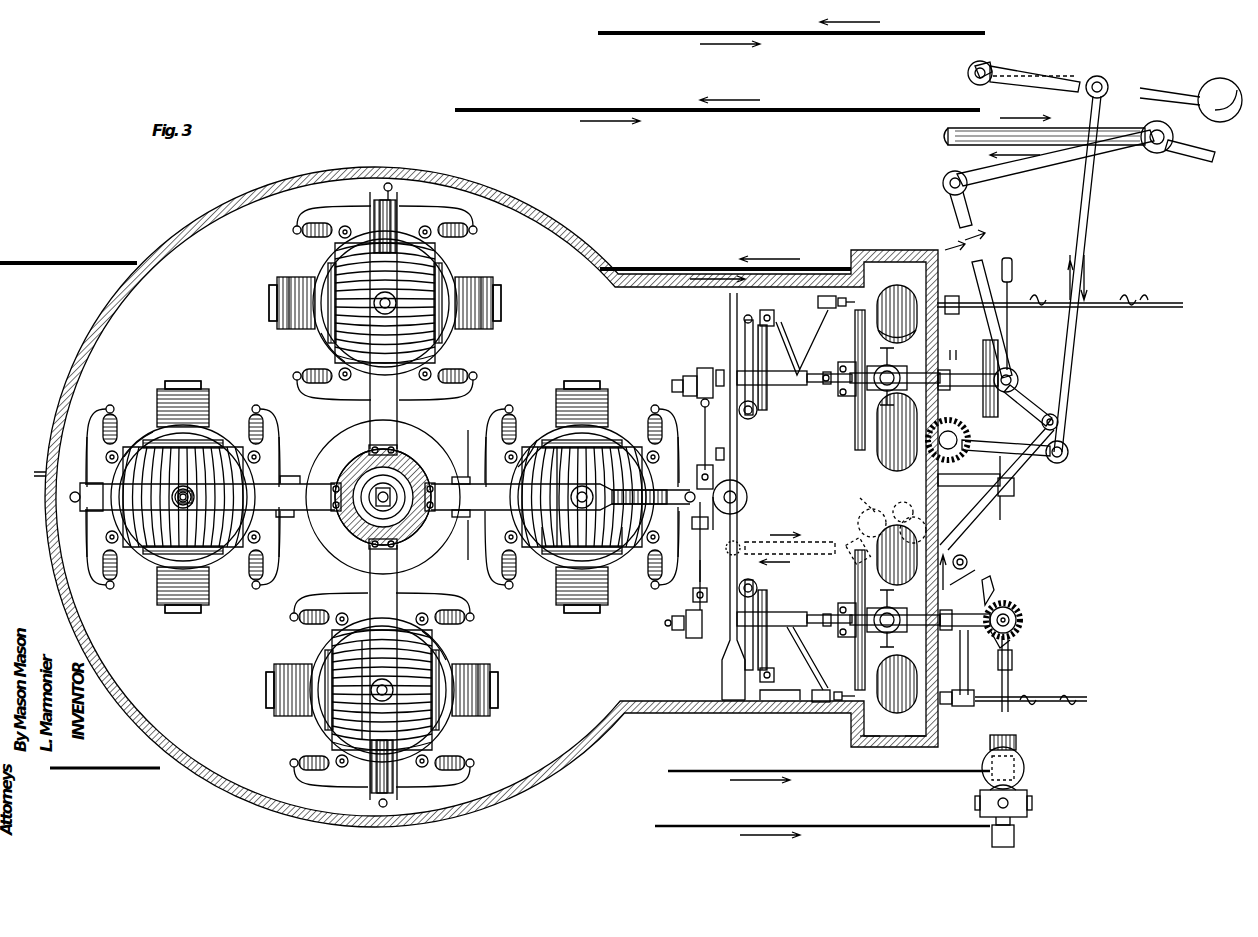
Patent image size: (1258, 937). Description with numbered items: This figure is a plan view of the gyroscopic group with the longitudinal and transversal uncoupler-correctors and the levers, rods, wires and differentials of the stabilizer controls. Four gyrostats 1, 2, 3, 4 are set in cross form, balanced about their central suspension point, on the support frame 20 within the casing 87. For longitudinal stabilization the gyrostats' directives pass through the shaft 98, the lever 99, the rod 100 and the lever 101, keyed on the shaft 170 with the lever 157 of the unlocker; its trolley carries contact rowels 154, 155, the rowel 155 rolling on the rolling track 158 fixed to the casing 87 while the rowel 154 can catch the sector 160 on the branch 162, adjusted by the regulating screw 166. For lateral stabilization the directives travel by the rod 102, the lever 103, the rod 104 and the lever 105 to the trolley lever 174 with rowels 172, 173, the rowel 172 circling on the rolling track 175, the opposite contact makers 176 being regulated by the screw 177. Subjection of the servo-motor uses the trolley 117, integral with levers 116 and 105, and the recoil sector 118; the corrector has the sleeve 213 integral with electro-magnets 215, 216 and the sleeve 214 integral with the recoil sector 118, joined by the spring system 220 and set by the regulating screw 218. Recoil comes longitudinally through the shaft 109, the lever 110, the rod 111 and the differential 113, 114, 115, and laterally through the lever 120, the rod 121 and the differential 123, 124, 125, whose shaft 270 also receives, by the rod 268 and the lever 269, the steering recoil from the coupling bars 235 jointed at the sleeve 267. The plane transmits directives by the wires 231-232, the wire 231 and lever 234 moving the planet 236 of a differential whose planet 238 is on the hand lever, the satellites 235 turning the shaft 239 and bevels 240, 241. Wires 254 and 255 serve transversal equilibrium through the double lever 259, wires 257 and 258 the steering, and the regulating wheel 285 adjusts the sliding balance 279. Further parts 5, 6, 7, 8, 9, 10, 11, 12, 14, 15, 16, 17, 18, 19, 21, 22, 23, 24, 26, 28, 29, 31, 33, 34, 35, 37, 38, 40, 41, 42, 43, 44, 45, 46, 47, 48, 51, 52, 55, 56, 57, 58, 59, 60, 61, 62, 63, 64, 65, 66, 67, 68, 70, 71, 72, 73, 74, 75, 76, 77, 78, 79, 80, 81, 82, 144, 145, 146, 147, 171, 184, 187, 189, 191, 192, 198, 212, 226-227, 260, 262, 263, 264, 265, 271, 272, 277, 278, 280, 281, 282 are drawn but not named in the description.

The gyrostat 1 is at (183, 497).
The gyrostat 2 is at (582, 497).
The gyrostat 3 is at (385, 303).
The gyrostat 4 is at (372, 690).
The bearing block 5 is at (191, 379).
The bearing block 6 is at (178, 620).
The bearing block 7 is at (588, 379).
The bearing block 8 is at (570, 600).
The shaft 9 is at (271, 314).
The shaft 10 is at (503, 306).
The shaft end 11 is at (259, 703).
The shaft end 12 is at (514, 687).
The central hub 14 is at (370, 462).
The hub ring 15 is at (402, 470).
The bearing 16 is at (395, 455).
The bearing 17 is at (372, 538).
The bearing 18 is at (427, 482).
The bearing 19 is at (345, 520).
The support frame 20 is at (347, 442).
The left arm 21 is at (310, 486).
The right arm 22 is at (425, 513).
The upper arm 23 is at (397, 420).
The lower arm 24 is at (397, 590).
The collar 26 is at (203, 496).
The rotor 28 is at (530, 551).
The shaft end 29 is at (254, 294).
The shaft 31 is at (498, 682).
The shaft center 33 is at (184, 507).
The rotor 34 is at (632, 567).
The shaft end 35 is at (510, 294).
The pin 37 is at (82, 503).
The bracket 38 is at (290, 480).
The bracket 40 is at (745, 510).
The pin 41 is at (399, 168).
The pin 42 is at (400, 774).
The stator ring 43 is at (183, 498).
The stator ring 44 is at (578, 489).
The stator ring 45 is at (397, 304).
The stator ring 46 is at (450, 645).
The yoke arm 47 is at (78, 535).
The shaft center 48 is at (183, 484).
The rod 51 is at (688, 451).
The rotor 52 is at (600, 480).
The rack 55 is at (362, 216).
The rack 56 is at (409, 217).
The rack 57 is at (361, 775).
The rotor 58 is at (325, 690).
The spring 59 is at (196, 432).
The spring 60 is at (103, 558).
The spring 61 is at (252, 494).
The yoke arm 62 is at (261, 557).
The yoke arm 63 is at (93, 435).
The spring 64 is at (114, 486).
The yoke arm 65 is at (284, 441).
The bracket 66 is at (284, 514).
The spring 67 is at (595, 427).
The spring 68 is at (505, 554).
The yoke arm 70 is at (658, 566).
The yoke arm 71 is at (478, 441).
The spring 72 is at (665, 489).
The rod 73 is at (475, 555).
The spring 74 is at (582, 501).
The spring 75 is at (332, 231).
The spring 76 is at (438, 231).
The spring 77 is at (312, 378).
The spring 78 is at (445, 373).
The spring 79 is at (326, 618).
The spring 80 is at (443, 616).
The spring 81 is at (306, 766).
The spring 82 is at (435, 759).
The casing 87 is at (730, 430).
The shaft 98 is at (460, 530).
The lever 99 is at (693, 542).
The rod 100 is at (680, 622).
The lever 101 is at (703, 635).
The rod 102 is at (470, 465).
The lever 103 is at (722, 470).
The rod 104 is at (725, 452).
The lever 105 is at (700, 372).
The shaft 109 is at (1085, 700).
The lever 110 is at (964, 708).
The rod 111 is at (975, 694).
The differential 113 is at (1000, 596).
The differential 114 is at (1020, 614).
The differential 115 is at (1021, 626).
The lever 116 is at (790, 374).
The trolley 117 is at (845, 300).
The recoil sector 118 is at (857, 440).
The lever 120 is at (958, 296).
The rod 121 is at (1000, 275).
The differential 123 is at (1000, 362).
The differential 124 is at (1018, 380).
The differential 125 is at (965, 387).
The pivot 144 is at (746, 494).
The pivot 145 is at (742, 535).
The slide 146 is at (803, 560).
The rack 147 is at (856, 562).
The contact rowel 154 is at (790, 672).
The contact rowel 155 is at (740, 702).
The lever 157 is at (790, 713).
The rolling track 158 is at (745, 640).
The sector 160 is at (750, 660).
The branch 162 is at (770, 613).
The regulating screw 166 is at (755, 588).
The shaft 170 is at (692, 640).
The contact 171 is at (690, 386).
The rowel 172 is at (748, 320).
The rowel 173 is at (772, 316).
The trolley lever 174 is at (805, 356).
The rolling track 175 is at (740, 355).
The contact makers 176 is at (748, 340).
The screw 177 is at (750, 418).
The casing wall 184 is at (915, 747).
The casing wall 187 is at (872, 747).
The contact 189 is at (822, 690).
The drum 191 is at (893, 712).
The bearing 192 is at (875, 618).
The brush 198 is at (841, 626).
The brush 212 is at (843, 396).
The sleeve 213 is at (905, 308).
The sleeve 214 is at (848, 400).
The electro-magnet 215 is at (880, 460).
The electro-magnet 216 is at (890, 285).
The regulating screw 218 is at (841, 385).
The spring system 220 is at (889, 392).
The conductors 226-227 is at (520, 763).
The wire 231 is at (1018, 765).
The wires 231-232 is at (822, 818).
The lever 234 is at (1014, 836).
The satellites 235 is at (1200, 150).
The planet 236 is at (1016, 819).
The planet 238 is at (1024, 791).
The shaft 239 is at (1010, 712).
The bevel 240 is at (1012, 656).
The bevel 241 is at (1015, 642).
The wire 254 is at (97, 260).
The wire 255 is at (40, 470).
The wire 257 is at (778, 37).
The wire 258 is at (740, 114).
The double lever 259 is at (1015, 310).
The handle 260 is at (1218, 82).
The pivot 262 is at (1097, 78).
The rod 263 is at (1090, 104).
The pivot 264 is at (1068, 448).
The shaft 265 is at (950, 146).
The sleeve 267 is at (1155, 152).
The rod 268 is at (1062, 168).
The lever 269 is at (955, 205).
The shaft 270 is at (1030, 403).
The pivot 271 is at (970, 76).
The shaft 272 is at (962, 472).
The pivot 277 is at (1060, 420).
The rod 278 is at (1020, 505).
The sliding balance 279 is at (945, 578).
The gear 280 is at (862, 515).
The lever 281 is at (852, 545).
The gear 282 is at (903, 518).
The regulating wheel 285 is at (975, 565).